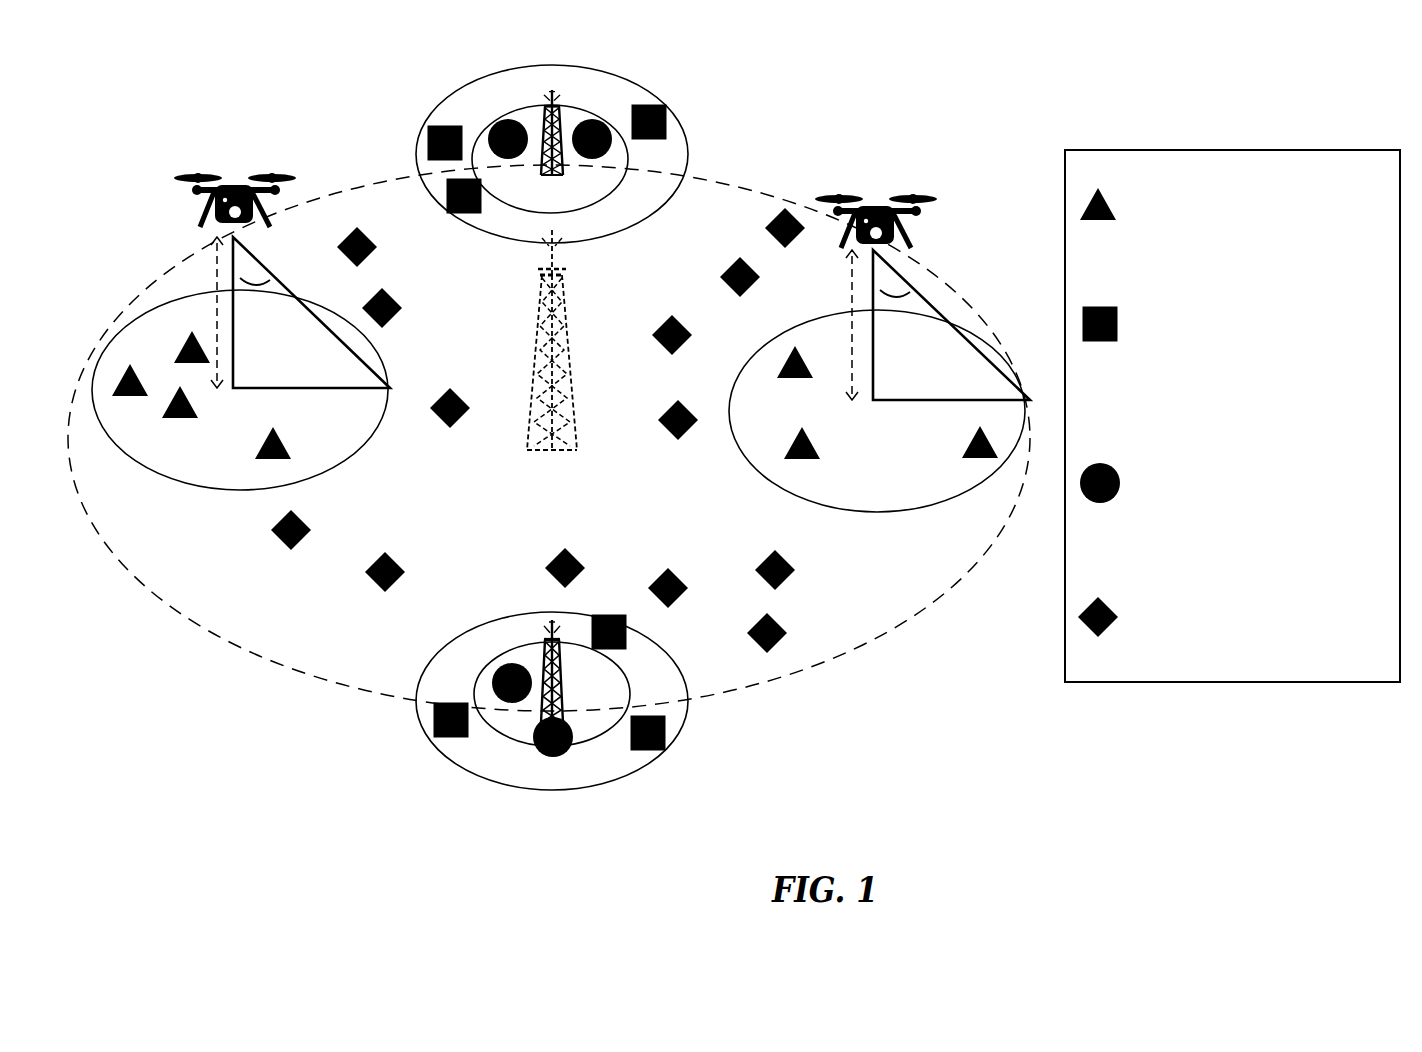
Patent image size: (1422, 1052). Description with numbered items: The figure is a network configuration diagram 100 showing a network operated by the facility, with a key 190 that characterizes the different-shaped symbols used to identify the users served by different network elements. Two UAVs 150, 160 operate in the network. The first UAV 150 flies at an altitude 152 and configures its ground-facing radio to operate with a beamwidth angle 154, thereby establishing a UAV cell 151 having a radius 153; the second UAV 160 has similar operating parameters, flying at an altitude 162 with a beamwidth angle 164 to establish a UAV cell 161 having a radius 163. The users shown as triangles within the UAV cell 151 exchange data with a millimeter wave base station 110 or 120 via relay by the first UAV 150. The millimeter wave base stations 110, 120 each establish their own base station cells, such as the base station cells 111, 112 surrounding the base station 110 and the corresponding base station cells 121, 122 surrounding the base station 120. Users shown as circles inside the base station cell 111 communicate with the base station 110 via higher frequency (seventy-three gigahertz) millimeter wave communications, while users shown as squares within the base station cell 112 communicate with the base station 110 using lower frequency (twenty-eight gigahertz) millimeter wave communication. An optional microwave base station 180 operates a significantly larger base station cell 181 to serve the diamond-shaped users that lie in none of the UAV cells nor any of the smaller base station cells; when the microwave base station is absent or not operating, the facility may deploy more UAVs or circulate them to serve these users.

The diagram 100 is at (325, 39).
The millimeter wave base station 110 is at (553, 128).
The base station cell 111 is at (623, 178).
The base station cell 112 is at (640, 222).
The millimeter wave base station 120 is at (547, 663).
The base station cell 121 is at (597, 740).
The base station cell 122 is at (580, 788).
The UAV 150 is at (170, 180).
The UAV cell 151 is at (187, 490).
The altitude d1 152 is at (216, 314).
The radius 153 is at (297, 392).
The beamwidth angle θ1 154 is at (255, 282).
The UAV 160 is at (945, 197).
The UAV cell 161 is at (900, 510).
The altitude d2 162 is at (852, 335).
The radius 163 is at (918, 402).
The beamwidth angle θ2 164 is at (897, 293).
The microwave base station 180 is at (557, 330).
The base station cell 181 is at (893, 628).
The key 190 is at (1348, 682).